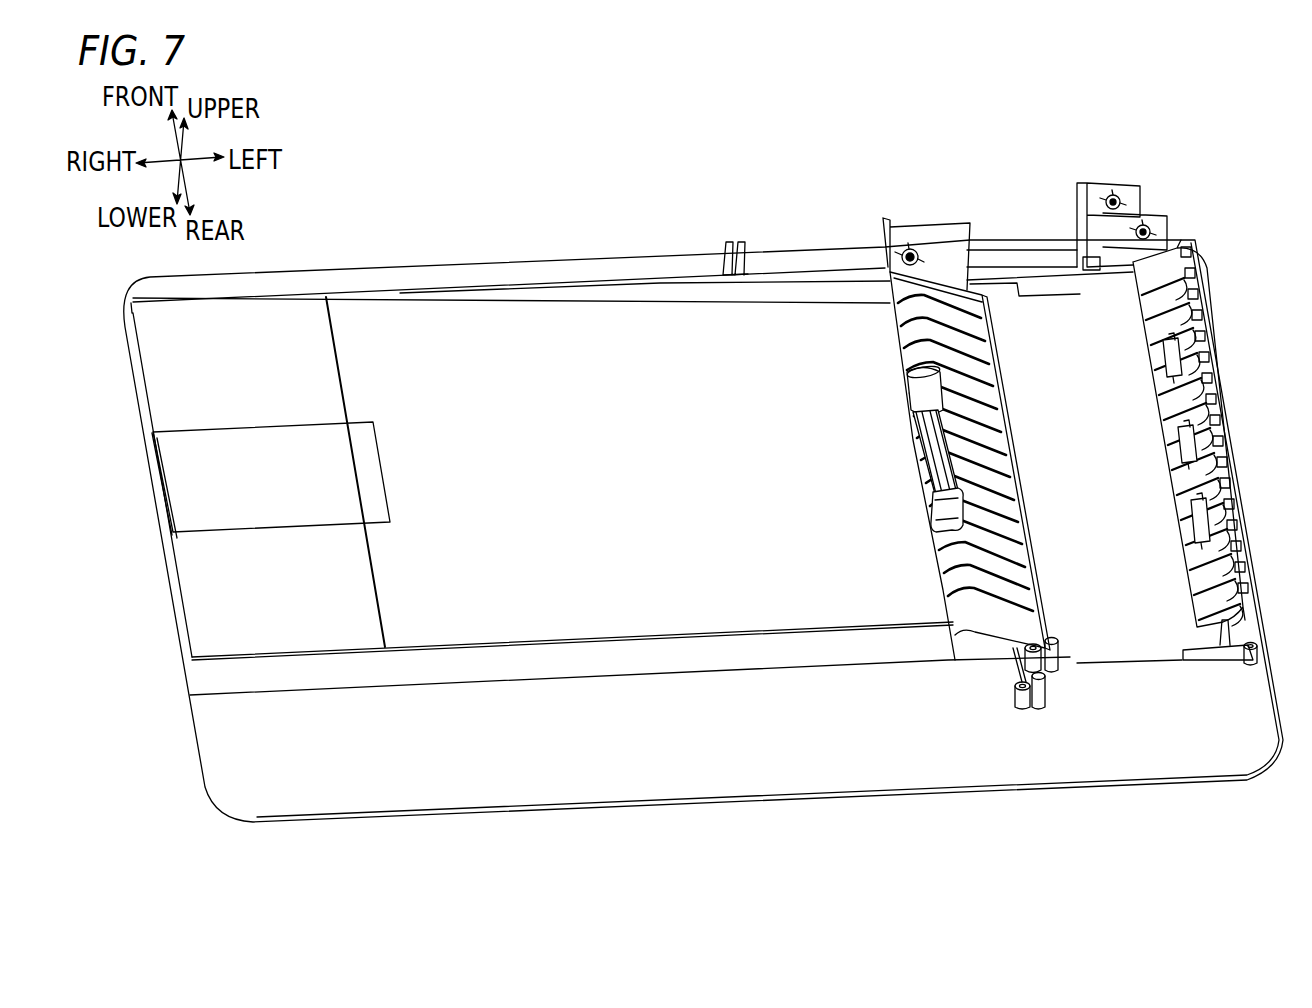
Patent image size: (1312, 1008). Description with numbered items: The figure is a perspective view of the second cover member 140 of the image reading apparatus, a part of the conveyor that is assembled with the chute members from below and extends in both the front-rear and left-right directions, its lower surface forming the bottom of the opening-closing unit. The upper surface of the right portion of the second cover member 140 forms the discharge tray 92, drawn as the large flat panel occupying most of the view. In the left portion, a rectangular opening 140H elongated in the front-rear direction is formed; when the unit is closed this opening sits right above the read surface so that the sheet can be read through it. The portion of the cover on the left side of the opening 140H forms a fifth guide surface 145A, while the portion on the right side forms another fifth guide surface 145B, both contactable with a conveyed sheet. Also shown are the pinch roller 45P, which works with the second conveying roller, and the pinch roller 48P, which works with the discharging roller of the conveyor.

The second cover member 140 is at (762, 253).
The discharge tray 92 is at (529, 365).
The opening 140H is at (1000, 357).
The fifth guide surface 145B is at (952, 347).
The pinch roller 48P is at (940, 512).
The fifth guide surface 145A is at (1165, 300).
The pinch roller 45P is at (1200, 437).